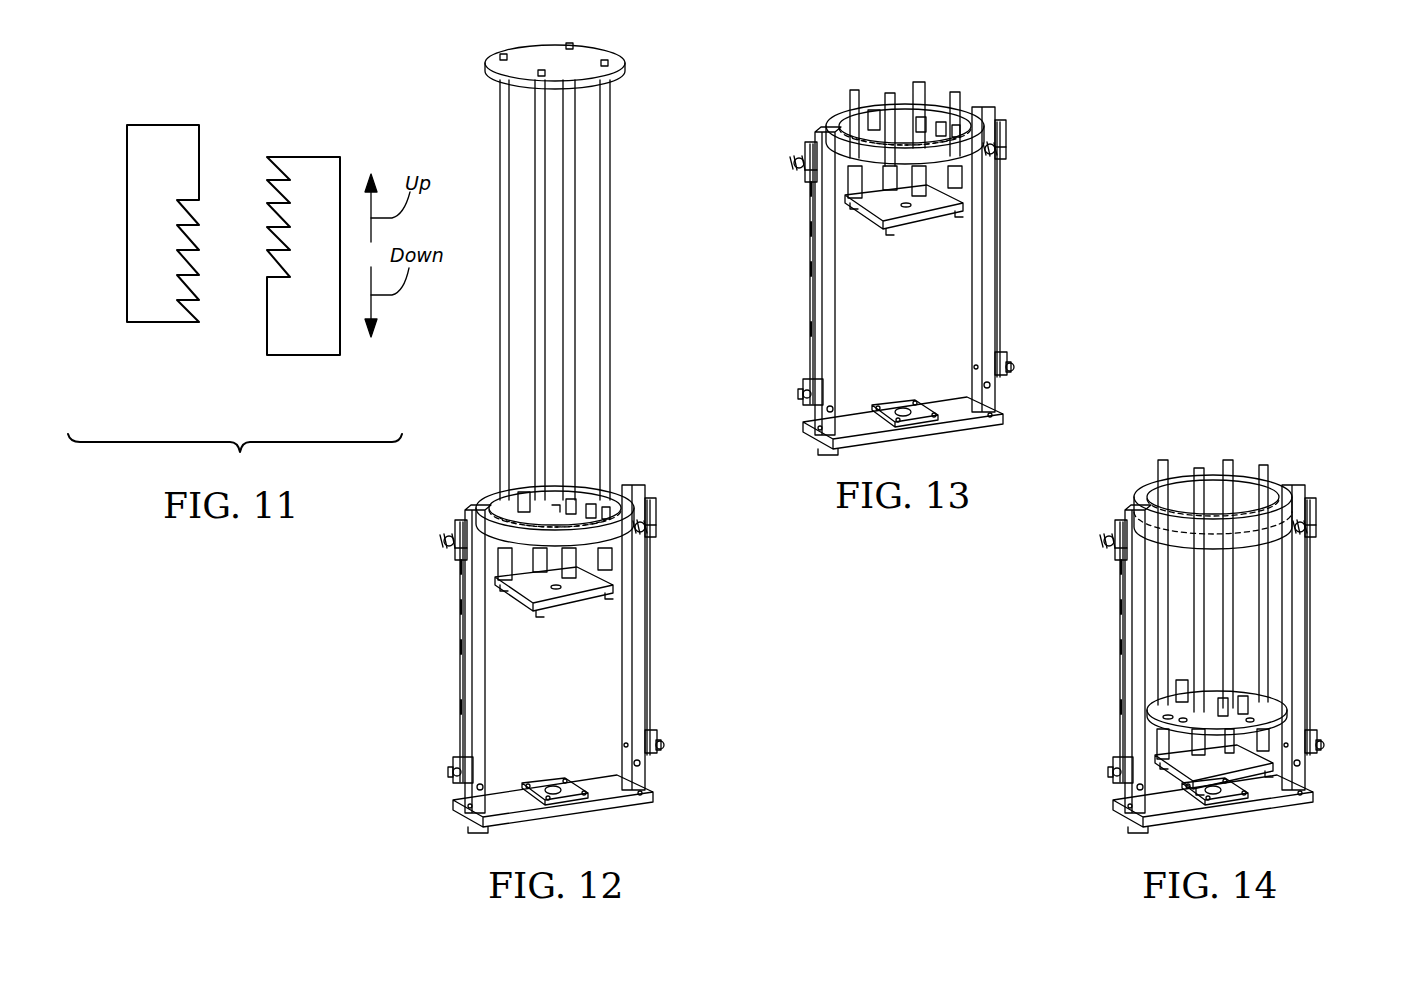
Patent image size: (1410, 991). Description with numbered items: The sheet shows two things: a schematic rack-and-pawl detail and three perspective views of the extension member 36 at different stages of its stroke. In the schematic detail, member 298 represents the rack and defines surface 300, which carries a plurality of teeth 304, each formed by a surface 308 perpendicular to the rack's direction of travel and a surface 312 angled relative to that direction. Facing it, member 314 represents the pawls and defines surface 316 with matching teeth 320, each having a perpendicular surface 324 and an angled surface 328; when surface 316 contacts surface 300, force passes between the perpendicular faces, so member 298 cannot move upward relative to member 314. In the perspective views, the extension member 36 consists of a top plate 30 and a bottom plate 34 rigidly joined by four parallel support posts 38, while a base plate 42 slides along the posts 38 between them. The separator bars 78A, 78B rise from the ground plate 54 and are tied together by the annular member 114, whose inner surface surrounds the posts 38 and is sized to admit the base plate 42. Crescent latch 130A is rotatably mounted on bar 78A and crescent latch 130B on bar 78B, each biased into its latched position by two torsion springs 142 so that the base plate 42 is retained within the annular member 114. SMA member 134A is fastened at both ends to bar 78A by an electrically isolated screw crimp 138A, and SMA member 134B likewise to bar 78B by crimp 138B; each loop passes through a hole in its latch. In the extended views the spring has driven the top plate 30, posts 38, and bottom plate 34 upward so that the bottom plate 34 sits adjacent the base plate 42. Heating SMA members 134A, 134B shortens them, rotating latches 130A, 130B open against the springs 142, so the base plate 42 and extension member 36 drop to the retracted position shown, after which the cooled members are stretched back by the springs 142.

In FIG. 11, the member 298 is at (230, 261).
In FIG. 11, the surface 300 is at (233, 180).
In FIG. 11, the teeth 304 is at (275, 168).
In FIG. 11, the surface 308 is at (270, 230).
In FIG. 11, the surface 312 is at (270, 256).
In FIG. 11, the member 314 is at (127, 292).
In FIG. 11, the surface 316 is at (240, 330).
In FIG. 11, the teeth 320 is at (200, 214).
In FIG. 11, the surface 324 is at (201, 264).
In FIG. 11, the surface 328 is at (200, 289).
In FIG. 12, the top plate 30 is at (540, 62).
In FIG. 12, the extension member 36 is at (553, 443).
In FIG. 12, the support posts 38 is at (540, 292).
In FIG. 13, the support posts 38 is at (905, 99).
In FIG. 14, the support posts 38 is at (1263, 465).
In FIG. 12, the base plate 42 is at (588, 503).
In FIG. 13, the base plate 42 is at (941, 99).
In FIG. 14, the base plate 42 is at (1280, 705).
In FIG. 12, the bottom plate 34 is at (554, 582).
In FIG. 13, the bottom plate 34 is at (939, 219).
In FIG. 14, the bottom plate 34 is at (1243, 772).
In FIG. 12, the ground plate 54 is at (615, 800).
In FIG. 13, the ground plate 54 is at (916, 439).
In FIG. 14, the ground plate 54 is at (1213, 820).
In FIG. 12, the separator bar 78A is at (480, 668).
In FIG. 13, the separator bar 78A is at (850, 281).
In FIG. 14, the separator bar 78A is at (1095, 659).
In FIG. 12, the separator bar 78B is at (640, 660).
In FIG. 13, the separator bar 78B is at (1032, 259).
In FIG. 14, the separator bar 78B is at (1334, 637).
In FIG. 12, the annular member 114 is at (483, 497).
In FIG. 13, the annular member 114 is at (905, 134).
In FIG. 14, the annular member 114 is at (1145, 490).
In FIG. 12, the crescent latch 130A is at (470, 565).
In FIG. 13, the crescent latch 130A is at (767, 184).
In FIG. 14, the crescent latch 130A is at (1074, 561).
In FIG. 12, the crescent latch 130B is at (652, 505).
In FIG. 13, the crescent latch 130B is at (1054, 124).
In FIG. 14, the crescent latch 130B is at (1339, 497).
In FIG. 12, the SMA member 134A is at (465, 715).
In FIG. 13, the SMA member 134A is at (780, 274).
In FIG. 14, the SMA member 134A is at (1071, 652).
In FIG. 12, the SMA member 134B is at (650, 705).
In FIG. 13, the SMA member 134B is at (1053, 249).
In FIG. 14, the SMA member 134B is at (1351, 627).
In FIG. 12, the electrically isolated screw crimp 138A is at (458, 782).
In FIG. 13, the electrically isolated screw crimp 138A is at (763, 374).
In FIG. 14, the electrically isolated screw crimp 138A is at (1075, 791).
In FIG. 12, the electrically isolated screw crimp 138B is at (662, 746).
In FIG. 13, the electrically isolated screw crimp 138B is at (1057, 374).
In FIG. 14, the electrically isolated screw crimp 138B is at (1355, 755).
In FIG. 12, the torsion springs 142 is at (455, 540).
In FIG. 13, the torsion springs 142 is at (913, 149).
In FIG. 14, the torsion springs 142 is at (1225, 533).